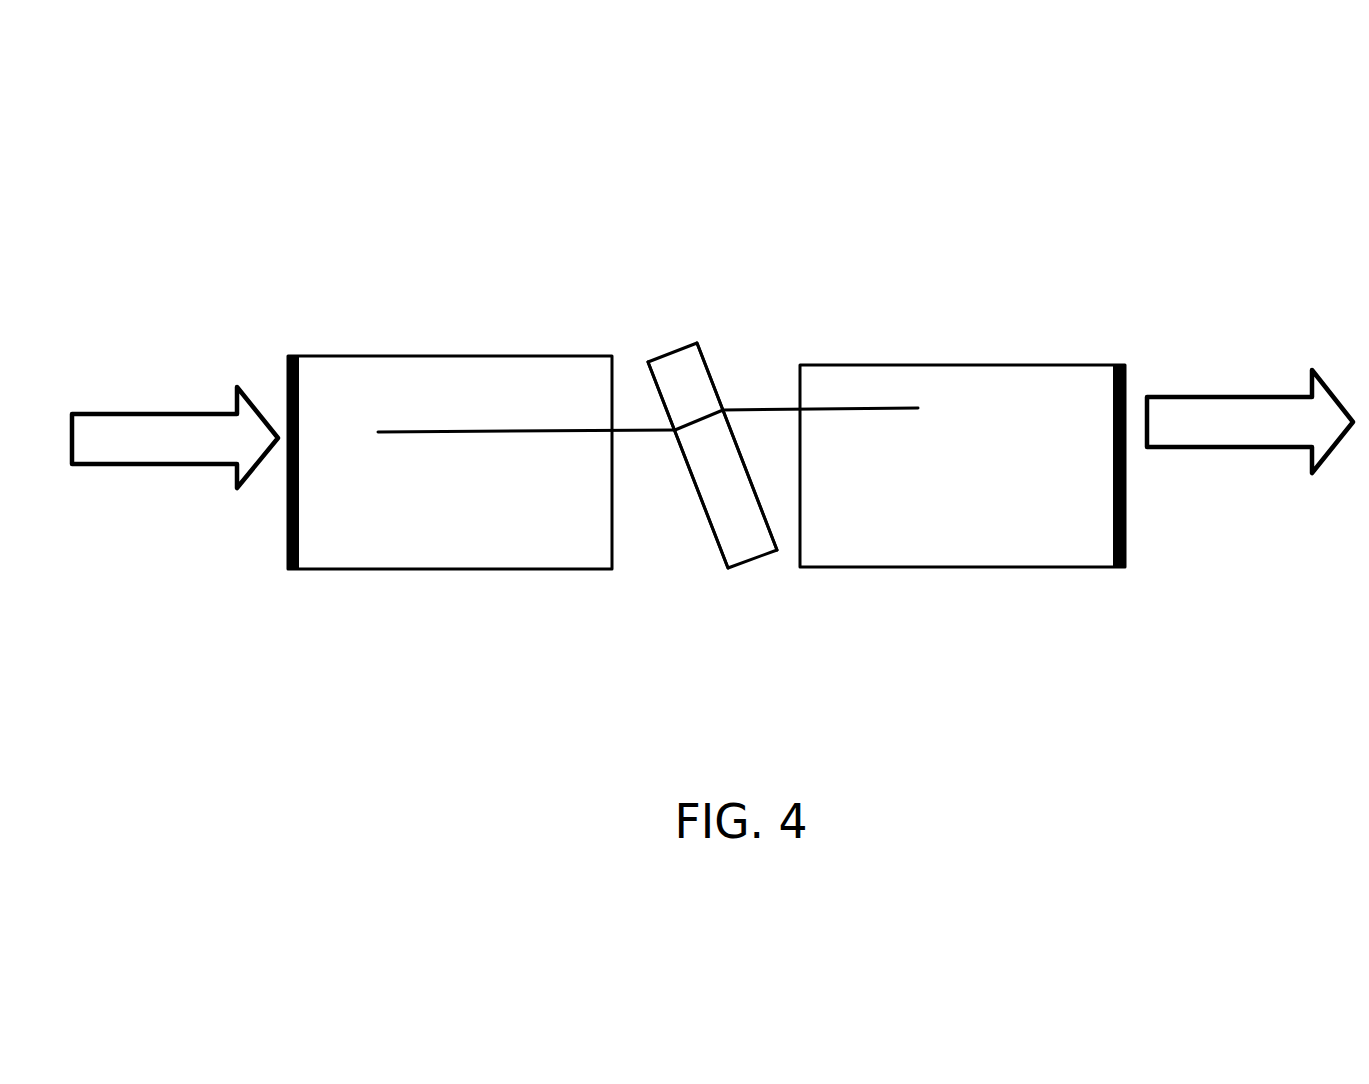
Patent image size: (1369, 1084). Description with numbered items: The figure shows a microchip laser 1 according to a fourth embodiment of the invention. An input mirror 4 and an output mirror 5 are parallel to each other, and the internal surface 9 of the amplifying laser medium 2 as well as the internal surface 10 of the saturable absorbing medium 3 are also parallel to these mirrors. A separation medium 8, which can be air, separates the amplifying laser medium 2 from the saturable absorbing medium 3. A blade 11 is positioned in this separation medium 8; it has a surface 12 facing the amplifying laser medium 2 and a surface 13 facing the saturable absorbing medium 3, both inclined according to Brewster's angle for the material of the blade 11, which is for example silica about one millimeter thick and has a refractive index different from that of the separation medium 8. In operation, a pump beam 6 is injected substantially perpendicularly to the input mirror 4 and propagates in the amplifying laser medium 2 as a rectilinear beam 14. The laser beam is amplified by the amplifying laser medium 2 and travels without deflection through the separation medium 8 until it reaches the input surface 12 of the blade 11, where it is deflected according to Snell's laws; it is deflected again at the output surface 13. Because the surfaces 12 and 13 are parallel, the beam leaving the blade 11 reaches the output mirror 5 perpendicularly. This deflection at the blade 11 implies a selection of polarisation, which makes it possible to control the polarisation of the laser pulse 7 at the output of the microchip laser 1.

The microchip laser 1 is at (452, 644).
The amplifying laser medium 2 is at (347, 535).
The saturable absorbing medium 3 is at (917, 553).
The input mirror 4 is at (288, 390).
The output mirror 5 is at (1125, 493).
The pump beam 6 is at (132, 452).
The laser pulse 7 is at (1207, 433).
The separation medium 8 is at (628, 386).
The internal surface of the amplifying laser medium 9 is at (618, 534).
The internal surface of the saturable absorbing medium 10 is at (800, 396).
The blade 11 is at (695, 378).
The input surface of the blade 12 is at (717, 535).
The output surface of the blade 13 is at (757, 503).
The rectilinear beam 14 is at (460, 427).